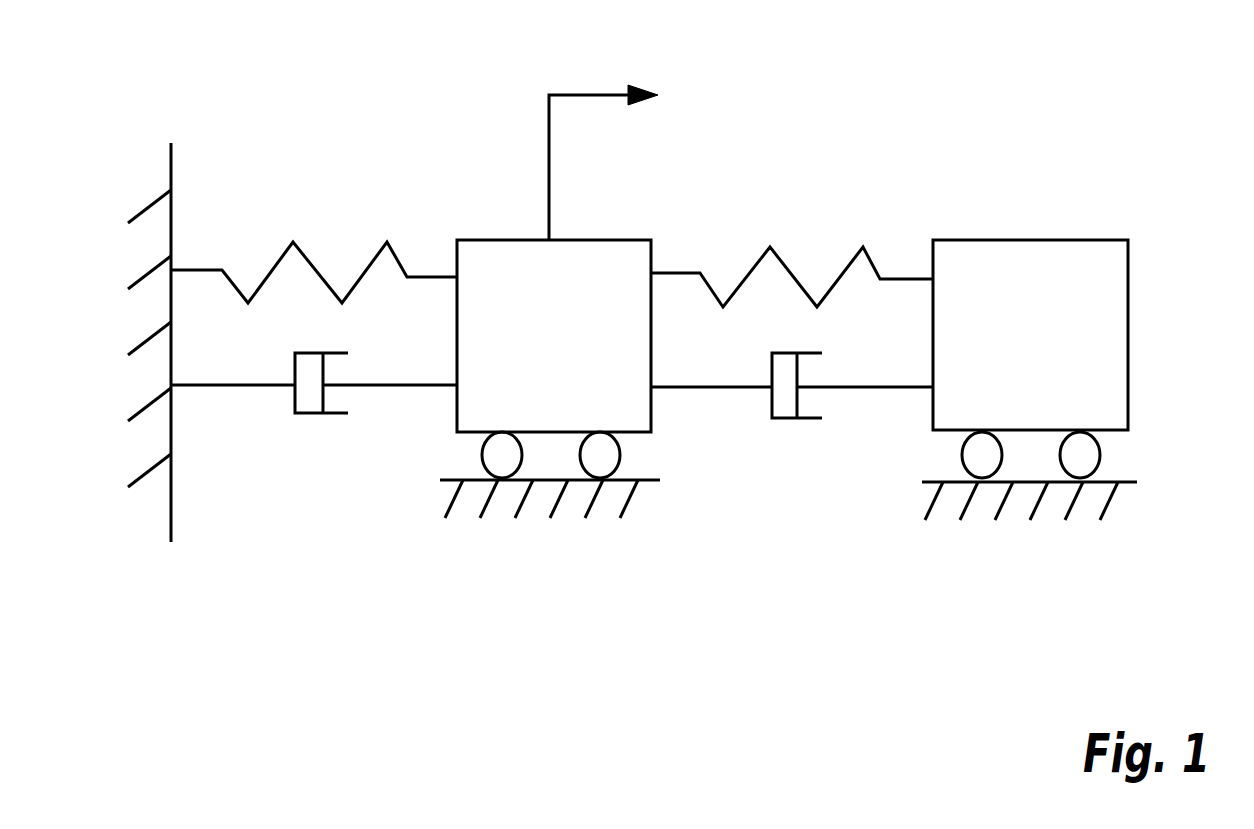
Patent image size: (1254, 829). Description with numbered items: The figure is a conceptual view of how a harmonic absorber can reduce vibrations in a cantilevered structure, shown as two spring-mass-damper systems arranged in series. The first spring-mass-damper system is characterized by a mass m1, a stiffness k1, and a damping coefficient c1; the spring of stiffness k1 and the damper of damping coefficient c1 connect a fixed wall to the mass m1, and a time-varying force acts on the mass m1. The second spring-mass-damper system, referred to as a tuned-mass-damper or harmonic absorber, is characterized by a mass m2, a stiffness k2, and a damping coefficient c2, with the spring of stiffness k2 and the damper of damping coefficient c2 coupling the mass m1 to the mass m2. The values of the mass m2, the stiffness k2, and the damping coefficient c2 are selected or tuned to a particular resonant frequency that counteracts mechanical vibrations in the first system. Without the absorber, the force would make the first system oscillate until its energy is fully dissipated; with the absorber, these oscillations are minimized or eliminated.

The stiffness k1 is at (314, 242).
The damping coefficient c1 is at (314, 443).
The mass m1 is at (550, 379).
The stiffness k2 is at (792, 244).
The damping coefficient c2 is at (792, 444).
The mass m2 is at (1029, 380).